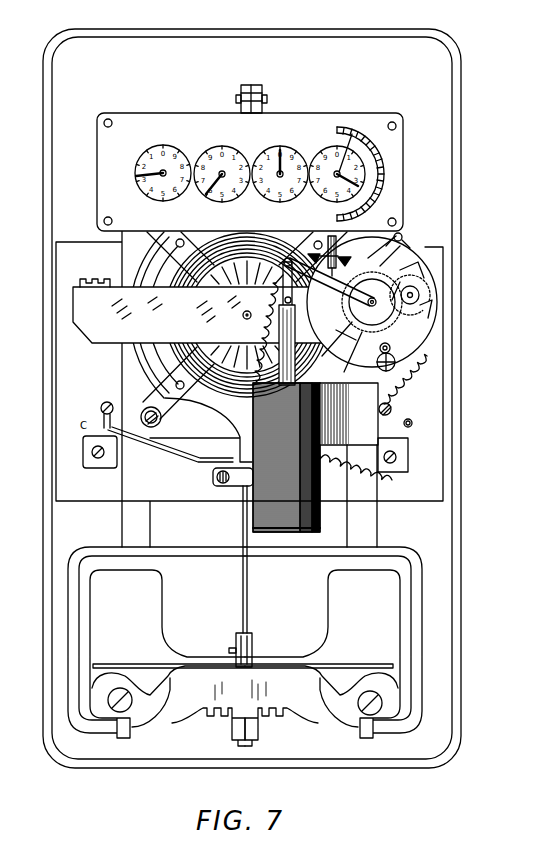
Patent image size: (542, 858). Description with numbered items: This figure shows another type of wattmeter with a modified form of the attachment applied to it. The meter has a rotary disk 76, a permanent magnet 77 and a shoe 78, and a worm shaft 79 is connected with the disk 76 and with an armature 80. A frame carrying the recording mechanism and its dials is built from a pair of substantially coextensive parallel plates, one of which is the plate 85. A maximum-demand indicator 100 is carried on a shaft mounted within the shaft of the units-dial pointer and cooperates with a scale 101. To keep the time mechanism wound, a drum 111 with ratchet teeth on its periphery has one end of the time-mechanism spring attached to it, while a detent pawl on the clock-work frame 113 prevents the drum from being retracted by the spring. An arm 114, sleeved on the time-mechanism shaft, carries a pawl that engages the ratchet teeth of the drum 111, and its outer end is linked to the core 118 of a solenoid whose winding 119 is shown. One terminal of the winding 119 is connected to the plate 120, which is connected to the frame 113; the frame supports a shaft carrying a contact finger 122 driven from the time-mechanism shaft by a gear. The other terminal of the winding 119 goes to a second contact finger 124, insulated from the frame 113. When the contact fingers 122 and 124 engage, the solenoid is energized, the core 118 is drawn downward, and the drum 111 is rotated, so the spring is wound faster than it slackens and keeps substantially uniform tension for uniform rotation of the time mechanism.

The rotary disk 76 is at (337, 665).
The permanent magnet 77 is at (333, 605).
The shoe 78 is at (245, 706).
The worm shaft 79 is at (253, 604).
The armature 80 is at (230, 276).
The plate 85 is at (396, 165).
The maximum-demand indicator 100 is at (339, 170).
The scale 101 is at (375, 150).
The drum 111 is at (372, 304).
The frame 113 is at (422, 266).
The arm 114 is at (304, 295).
The core 118 is at (297, 324).
The winding 119 is at (320, 521).
The plate 120 is at (404, 390).
The contact finger 122 is at (372, 260).
The second contact finger 124 is at (398, 233).